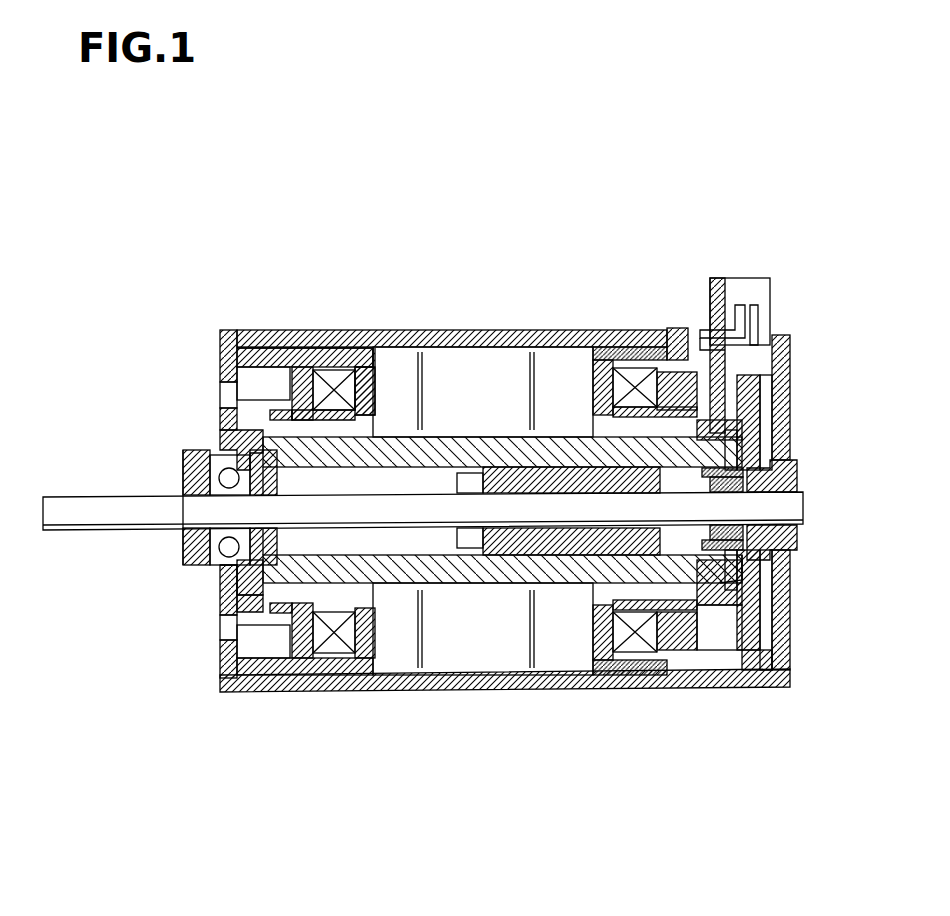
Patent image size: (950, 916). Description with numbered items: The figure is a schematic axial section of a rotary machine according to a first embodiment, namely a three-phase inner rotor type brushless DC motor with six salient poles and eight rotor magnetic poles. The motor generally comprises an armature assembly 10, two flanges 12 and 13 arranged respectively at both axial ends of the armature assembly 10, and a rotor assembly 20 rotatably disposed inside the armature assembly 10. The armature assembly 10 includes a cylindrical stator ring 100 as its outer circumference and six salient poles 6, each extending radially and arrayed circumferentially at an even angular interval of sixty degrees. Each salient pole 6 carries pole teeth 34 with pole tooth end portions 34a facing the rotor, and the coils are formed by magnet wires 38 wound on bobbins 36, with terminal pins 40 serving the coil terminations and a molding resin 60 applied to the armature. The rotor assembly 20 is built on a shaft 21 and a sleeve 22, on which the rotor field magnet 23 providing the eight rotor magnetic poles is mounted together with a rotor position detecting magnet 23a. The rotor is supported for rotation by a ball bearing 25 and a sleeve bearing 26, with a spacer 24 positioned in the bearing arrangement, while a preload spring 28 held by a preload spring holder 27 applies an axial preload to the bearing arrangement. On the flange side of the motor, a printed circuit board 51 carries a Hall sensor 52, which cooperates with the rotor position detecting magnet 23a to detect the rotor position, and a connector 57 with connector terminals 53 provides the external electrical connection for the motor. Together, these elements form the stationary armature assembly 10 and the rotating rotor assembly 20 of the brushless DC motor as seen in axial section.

The armature assembly 10 is at (358, 292).
The cylindrical stator ring 100 is at (262, 693).
The flange 12 is at (220, 366).
The flange 13 is at (781, 364).
The rotor assembly 20 is at (566, 590).
The shaft 21 is at (108, 505).
The sleeve 22 is at (517, 548).
The rotor field magnet 23 is at (470, 580).
The rotor position detecting magnet 23a is at (763, 690).
The spacer 24 is at (237, 630).
The ball bearing 25 is at (222, 565).
The sleeve bearing 26 is at (782, 486).
The preload spring holder 27 is at (742, 562).
The preload spring 28 is at (745, 533).
The pole teeth 34 is at (555, 347).
The pole tooth end portions 34a is at (446, 347).
The bobbin 36 is at (606, 347).
The magnet wire 38 is at (648, 350).
The terminal pin 40 is at (726, 690).
The printed circuit board 51 is at (718, 282).
The Hall sensor 52 is at (730, 425).
The connector terminals 53 is at (757, 316).
The connector 57 is at (757, 290).
The salient pole 6 is at (488, 395).
The molding resin 60 is at (255, 347).